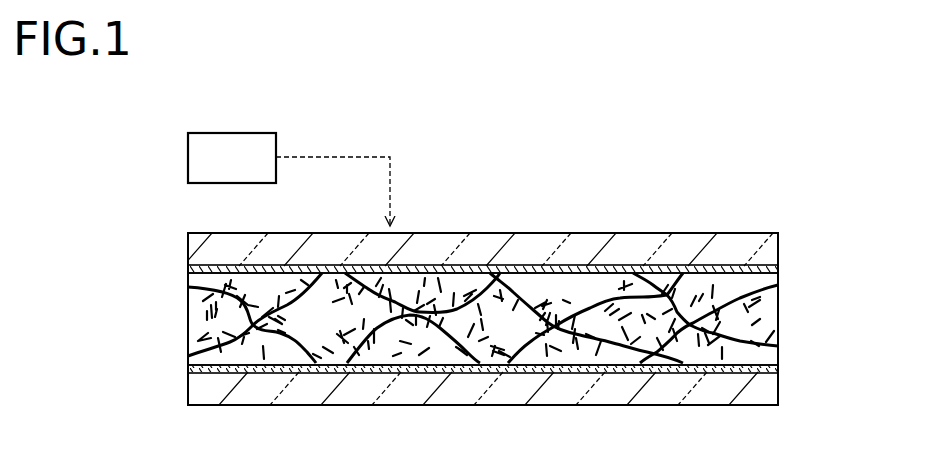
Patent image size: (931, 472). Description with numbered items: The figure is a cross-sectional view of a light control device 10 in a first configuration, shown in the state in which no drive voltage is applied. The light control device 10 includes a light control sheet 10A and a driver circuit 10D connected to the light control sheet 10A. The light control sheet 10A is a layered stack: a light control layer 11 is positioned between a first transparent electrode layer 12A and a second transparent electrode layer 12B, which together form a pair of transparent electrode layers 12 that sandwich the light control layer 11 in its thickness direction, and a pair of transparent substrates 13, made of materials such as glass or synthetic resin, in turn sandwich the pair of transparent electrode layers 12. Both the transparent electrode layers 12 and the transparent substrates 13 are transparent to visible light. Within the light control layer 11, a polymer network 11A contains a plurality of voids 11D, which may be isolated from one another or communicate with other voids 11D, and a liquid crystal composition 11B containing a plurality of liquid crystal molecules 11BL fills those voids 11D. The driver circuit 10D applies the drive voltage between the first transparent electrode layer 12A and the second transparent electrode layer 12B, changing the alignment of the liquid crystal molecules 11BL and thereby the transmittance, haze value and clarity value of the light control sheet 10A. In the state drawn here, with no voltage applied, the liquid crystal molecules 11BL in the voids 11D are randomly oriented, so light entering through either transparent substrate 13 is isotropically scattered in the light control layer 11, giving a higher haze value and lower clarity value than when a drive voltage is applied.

The light control device 10 is at (837, 79).
The light control sheet 10A is at (852, 222).
The driver circuit 10D is at (188, 158).
The light control layer 11 is at (188, 332).
The polymer network 11A is at (303, 282).
The liquid crystal composition 11B is at (528, 358).
The liquid crystal molecules 11BL is at (632, 280).
The voids 11D is at (305, 353).
The pair of transparent electrode layers 12 is at (778, 272).
The first transparent electrode layer 12A is at (545, 265).
The second transparent electrode layer 12B is at (545, 365).
The pair of transparent substrates 13 is at (188, 247).